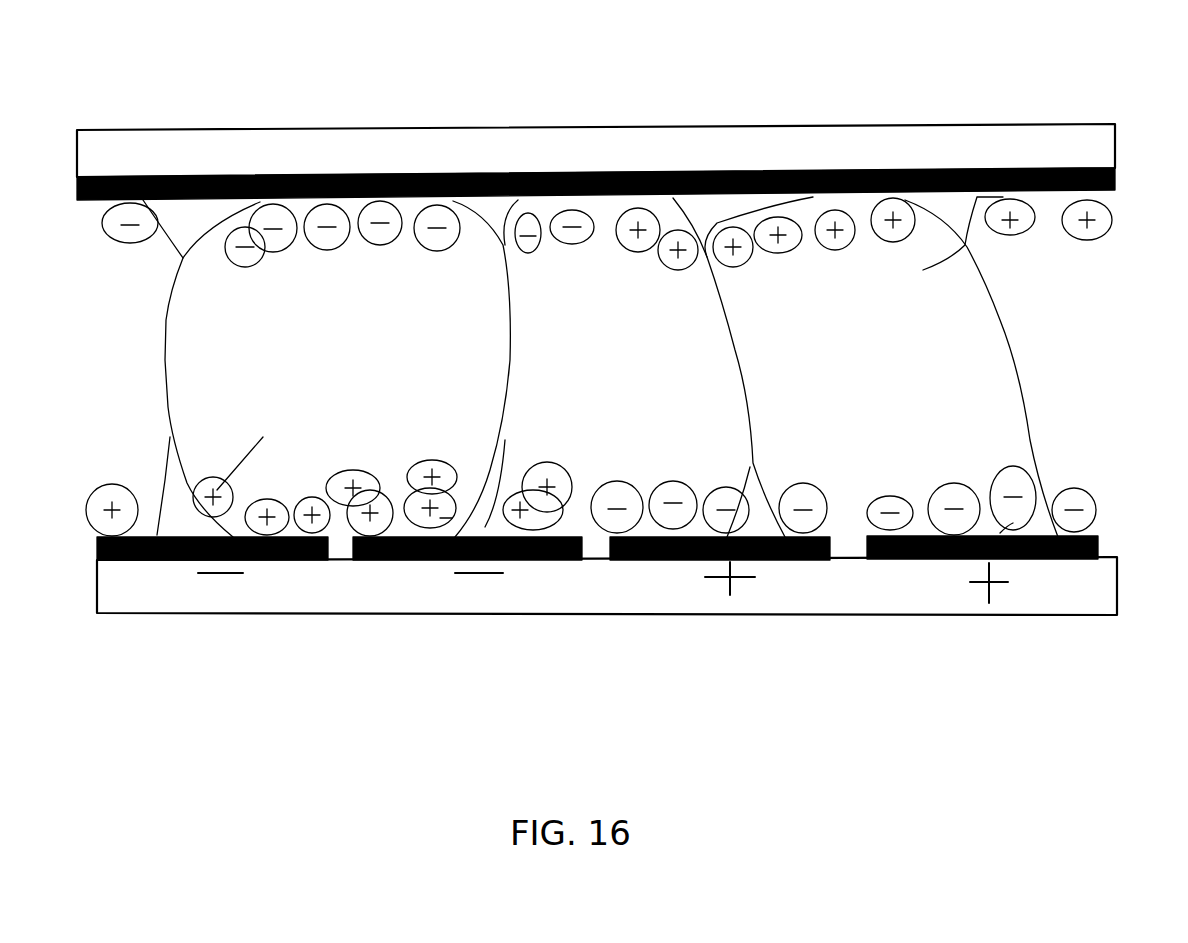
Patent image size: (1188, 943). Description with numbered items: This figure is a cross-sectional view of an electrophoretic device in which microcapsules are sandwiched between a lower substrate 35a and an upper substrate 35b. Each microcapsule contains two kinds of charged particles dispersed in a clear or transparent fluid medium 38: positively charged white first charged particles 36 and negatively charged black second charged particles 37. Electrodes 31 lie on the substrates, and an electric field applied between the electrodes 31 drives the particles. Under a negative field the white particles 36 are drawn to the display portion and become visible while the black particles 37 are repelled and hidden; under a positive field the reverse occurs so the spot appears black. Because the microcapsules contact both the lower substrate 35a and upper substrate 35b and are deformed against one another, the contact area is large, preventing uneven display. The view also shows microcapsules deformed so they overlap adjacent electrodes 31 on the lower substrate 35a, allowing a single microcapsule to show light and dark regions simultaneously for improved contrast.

The electrodes 31 is at (453, 180).
The lower substrate 35a is at (693, 603).
The upper substrate 35b is at (687, 137).
The first charged particle 36 is at (918, 170).
The second charged particle 37 is at (580, 222).
The fluid medium 38 is at (997, 168).